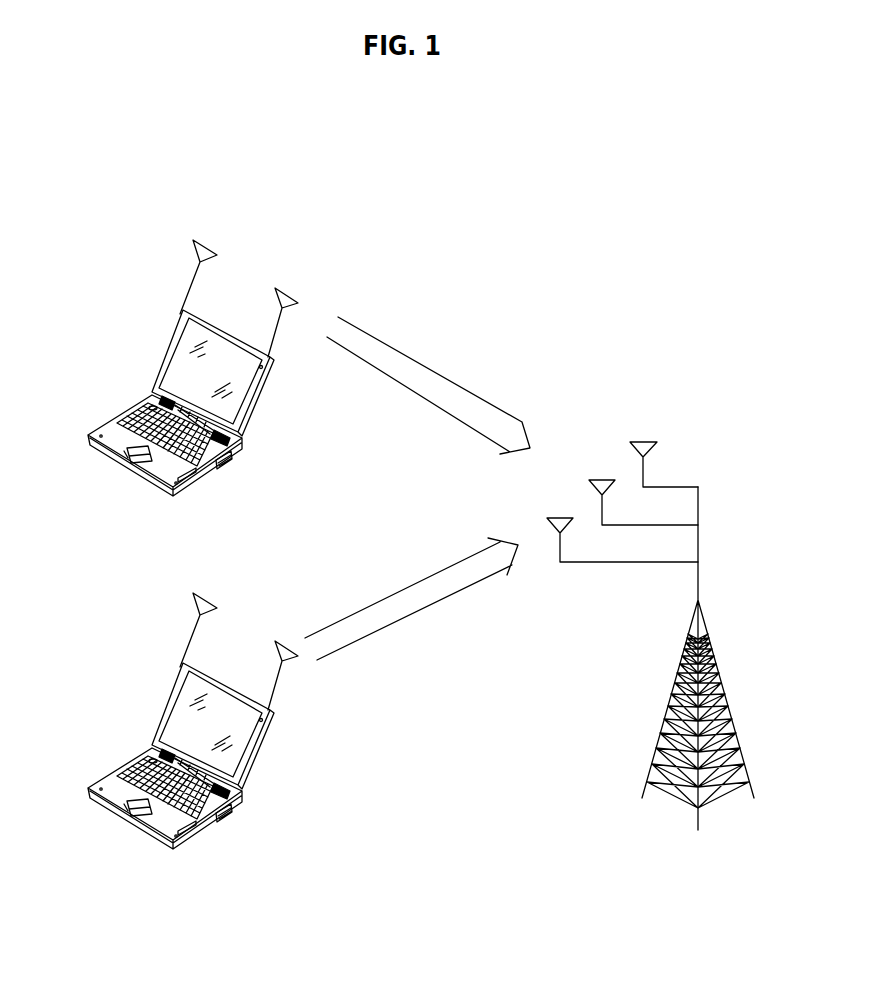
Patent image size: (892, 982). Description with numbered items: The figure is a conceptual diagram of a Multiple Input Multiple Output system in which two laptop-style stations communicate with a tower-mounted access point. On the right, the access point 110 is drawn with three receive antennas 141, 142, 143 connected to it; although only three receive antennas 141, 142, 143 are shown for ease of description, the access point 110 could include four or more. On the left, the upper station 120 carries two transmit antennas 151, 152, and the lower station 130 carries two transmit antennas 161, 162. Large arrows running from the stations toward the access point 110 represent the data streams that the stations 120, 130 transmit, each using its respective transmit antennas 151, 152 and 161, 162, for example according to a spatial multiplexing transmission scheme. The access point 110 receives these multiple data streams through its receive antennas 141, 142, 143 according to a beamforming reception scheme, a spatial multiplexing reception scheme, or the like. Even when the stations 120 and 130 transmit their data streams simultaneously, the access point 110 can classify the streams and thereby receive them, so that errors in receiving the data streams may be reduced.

The access point 110 is at (683, 695).
The station 120 is at (130, 468).
The station 130 is at (130, 821).
The receive antenna 141 is at (643, 441).
The receive antenna 142 is at (601, 479).
The receive antenna 143 is at (560, 517).
The transmit antenna 151 is at (210, 244).
The transmit antenna 152 is at (288, 291).
The transmit antenna 161 is at (210, 597).
The transmit antenna 162 is at (288, 644).